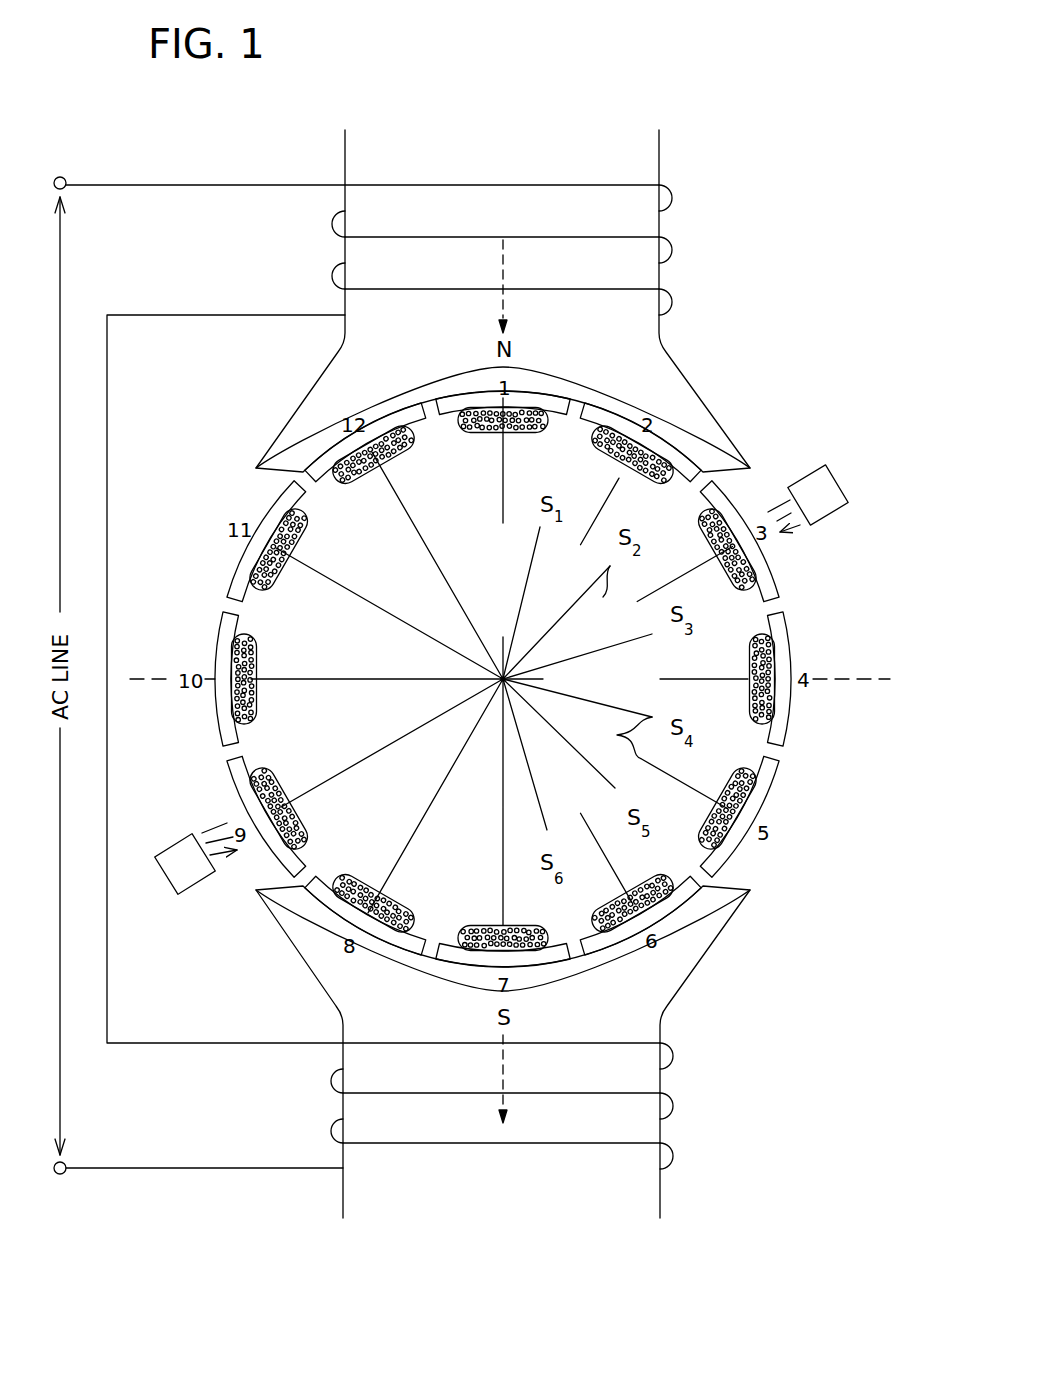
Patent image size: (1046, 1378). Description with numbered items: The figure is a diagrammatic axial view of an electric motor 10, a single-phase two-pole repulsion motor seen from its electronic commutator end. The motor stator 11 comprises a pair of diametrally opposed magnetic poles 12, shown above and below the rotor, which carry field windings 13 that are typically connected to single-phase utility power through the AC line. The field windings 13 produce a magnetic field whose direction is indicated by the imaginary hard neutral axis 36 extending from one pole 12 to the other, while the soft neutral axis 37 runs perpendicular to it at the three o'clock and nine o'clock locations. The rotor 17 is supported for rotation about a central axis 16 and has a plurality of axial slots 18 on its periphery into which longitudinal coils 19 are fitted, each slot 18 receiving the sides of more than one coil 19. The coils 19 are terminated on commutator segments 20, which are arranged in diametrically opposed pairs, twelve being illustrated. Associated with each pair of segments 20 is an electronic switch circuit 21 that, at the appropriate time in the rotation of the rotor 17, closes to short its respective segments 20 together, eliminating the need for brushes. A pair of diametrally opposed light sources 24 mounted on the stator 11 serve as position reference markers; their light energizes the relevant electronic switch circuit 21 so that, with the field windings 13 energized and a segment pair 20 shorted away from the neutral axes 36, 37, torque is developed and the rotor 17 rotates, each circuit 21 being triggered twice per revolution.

The electric motor 10 is at (535, 674).
The motor stator 11 is at (665, 158).
The magnetic pole 12 is at (648, 352).
The field winding 13 is at (378, 238).
The central axis 16 is at (504, 679).
The rotor 17 is at (505, 679).
The axial slot 18 is at (240, 572).
The longitudinal coil 19 is at (272, 526).
The commutator segment 20 is at (270, 884).
The electronic switch circuit 21 is at (637, 601).
The light source 24 is at (173, 881).
The hard neutral axis 36 is at (507, 278).
The soft neutral axis 37 is at (853, 683).